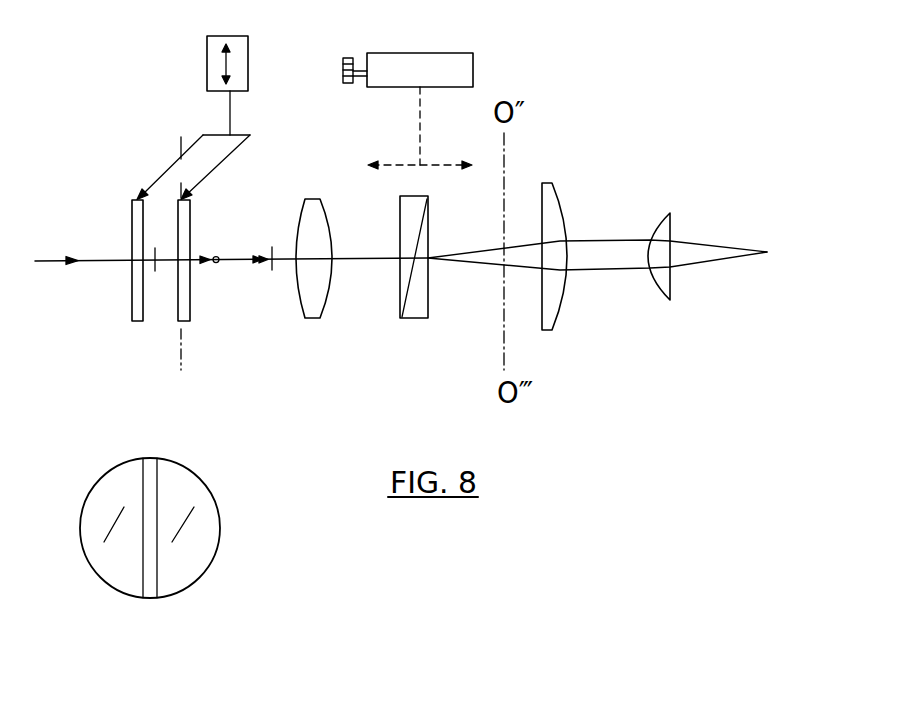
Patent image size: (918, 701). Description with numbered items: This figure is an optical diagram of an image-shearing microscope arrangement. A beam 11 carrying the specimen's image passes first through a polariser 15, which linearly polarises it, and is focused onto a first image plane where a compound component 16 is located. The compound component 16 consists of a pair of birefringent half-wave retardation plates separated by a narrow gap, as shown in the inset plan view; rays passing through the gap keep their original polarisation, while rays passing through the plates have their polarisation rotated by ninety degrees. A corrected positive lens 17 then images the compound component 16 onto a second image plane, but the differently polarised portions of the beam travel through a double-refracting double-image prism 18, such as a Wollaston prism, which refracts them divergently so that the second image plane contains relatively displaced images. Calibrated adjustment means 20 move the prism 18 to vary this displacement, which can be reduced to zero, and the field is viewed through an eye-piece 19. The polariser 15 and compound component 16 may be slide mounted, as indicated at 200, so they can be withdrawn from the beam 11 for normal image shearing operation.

The beam 11 is at (36, 261).
The polariser 15 is at (137, 309).
The compound component 16 is at (180, 309).
The corrected positive lens 17 is at (312, 308).
The double-refracting double-image prism 18 is at (418, 310).
The eye-piece 19 is at (665, 287).
The calibrated adjustment means 20 is at (473, 57).
The slide mounting 200 is at (248, 42).